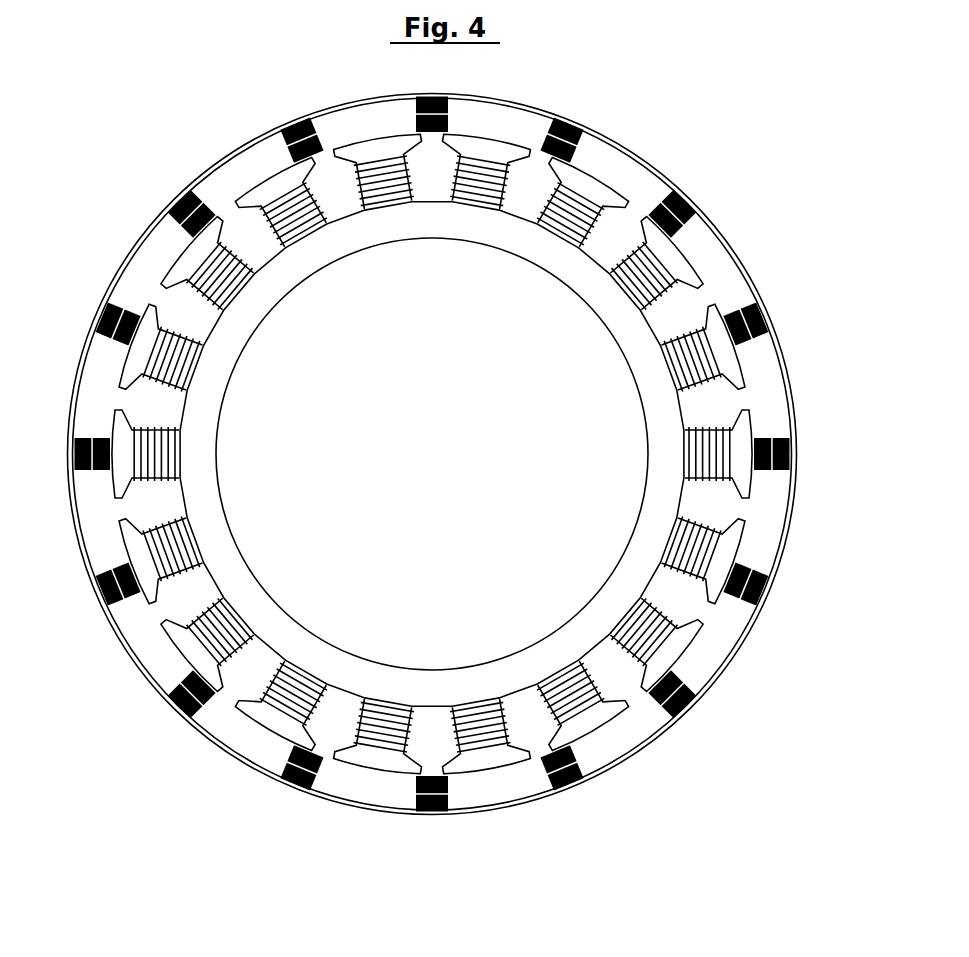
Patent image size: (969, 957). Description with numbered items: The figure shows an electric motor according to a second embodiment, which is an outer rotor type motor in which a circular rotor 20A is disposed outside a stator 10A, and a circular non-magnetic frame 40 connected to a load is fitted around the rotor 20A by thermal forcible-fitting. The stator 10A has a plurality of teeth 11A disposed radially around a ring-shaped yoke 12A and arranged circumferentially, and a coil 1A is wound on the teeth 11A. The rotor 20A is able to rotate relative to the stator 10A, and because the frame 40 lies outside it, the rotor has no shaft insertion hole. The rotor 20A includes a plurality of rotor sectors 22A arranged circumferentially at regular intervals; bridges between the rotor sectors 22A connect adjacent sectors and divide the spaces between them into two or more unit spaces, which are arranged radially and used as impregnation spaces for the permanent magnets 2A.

The coil 1A is at (142, 461).
The permanent magnets 2A is at (758, 438).
The stator 10A is at (393, 497).
The teeth 11A is at (676, 368).
The ring-shaped yoke 12A is at (620, 340).
The rotor 20A is at (463, 490).
The rotor sectors 22A is at (716, 648).
The non-magnetic frame 40 is at (792, 523).